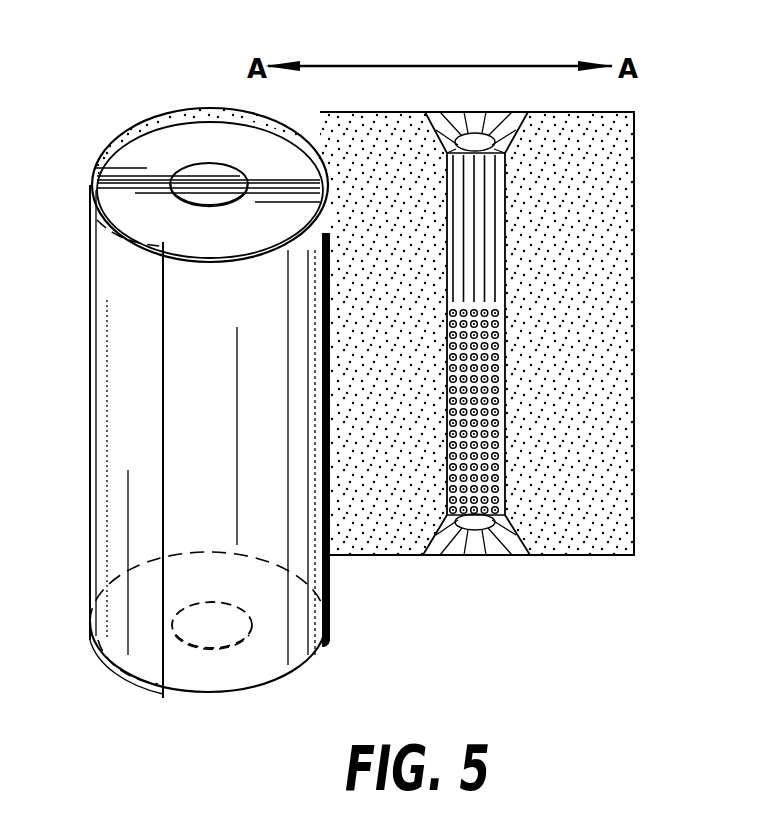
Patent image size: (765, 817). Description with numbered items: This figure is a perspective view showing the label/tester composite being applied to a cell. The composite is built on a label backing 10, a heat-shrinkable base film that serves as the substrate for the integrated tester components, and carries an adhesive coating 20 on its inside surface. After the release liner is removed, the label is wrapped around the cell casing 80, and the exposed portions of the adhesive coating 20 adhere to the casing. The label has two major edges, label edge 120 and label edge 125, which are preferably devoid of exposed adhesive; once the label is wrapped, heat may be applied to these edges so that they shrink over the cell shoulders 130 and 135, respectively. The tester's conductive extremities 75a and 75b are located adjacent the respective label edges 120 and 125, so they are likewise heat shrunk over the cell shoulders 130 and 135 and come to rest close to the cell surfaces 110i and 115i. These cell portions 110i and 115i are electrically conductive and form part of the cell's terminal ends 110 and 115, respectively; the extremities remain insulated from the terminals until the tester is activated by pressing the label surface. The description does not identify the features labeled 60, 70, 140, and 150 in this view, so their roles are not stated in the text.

The label backing 10 is at (110, 394).
The adhesive coating 20 is at (560, 305).
The indicator strip channel 60 is at (507, 185).
The outer surface of roll 70 is at (276, 685).
The extremity 75a is at (476, 112).
The extremity 75b is at (472, 555).
The cell casing 80 is at (329, 613).
The terminal end 110 is at (212, 197).
The cell surface 110i is at (207, 138).
The terminal end 115 is at (212, 652).
The cell surface 115i is at (232, 673).
The label edge 120 is at (118, 140).
The label edge 125 is at (118, 680).
The cell shoulder 130 is at (317, 112).
The cell shoulder 135 is at (313, 663).
The slit 140 is at (164, 434).
The outer face of web 150 is at (634, 242).